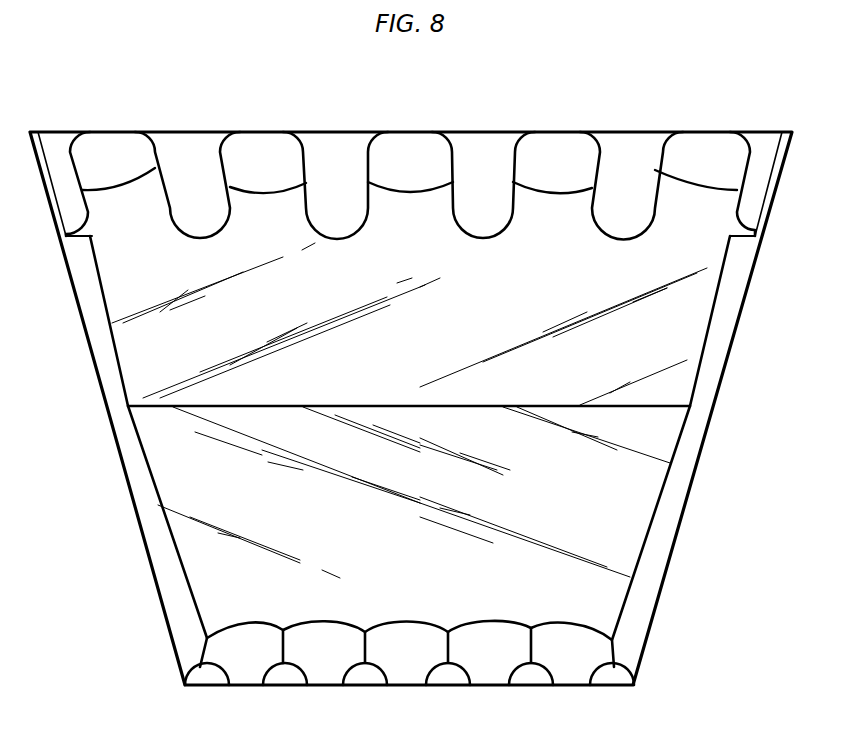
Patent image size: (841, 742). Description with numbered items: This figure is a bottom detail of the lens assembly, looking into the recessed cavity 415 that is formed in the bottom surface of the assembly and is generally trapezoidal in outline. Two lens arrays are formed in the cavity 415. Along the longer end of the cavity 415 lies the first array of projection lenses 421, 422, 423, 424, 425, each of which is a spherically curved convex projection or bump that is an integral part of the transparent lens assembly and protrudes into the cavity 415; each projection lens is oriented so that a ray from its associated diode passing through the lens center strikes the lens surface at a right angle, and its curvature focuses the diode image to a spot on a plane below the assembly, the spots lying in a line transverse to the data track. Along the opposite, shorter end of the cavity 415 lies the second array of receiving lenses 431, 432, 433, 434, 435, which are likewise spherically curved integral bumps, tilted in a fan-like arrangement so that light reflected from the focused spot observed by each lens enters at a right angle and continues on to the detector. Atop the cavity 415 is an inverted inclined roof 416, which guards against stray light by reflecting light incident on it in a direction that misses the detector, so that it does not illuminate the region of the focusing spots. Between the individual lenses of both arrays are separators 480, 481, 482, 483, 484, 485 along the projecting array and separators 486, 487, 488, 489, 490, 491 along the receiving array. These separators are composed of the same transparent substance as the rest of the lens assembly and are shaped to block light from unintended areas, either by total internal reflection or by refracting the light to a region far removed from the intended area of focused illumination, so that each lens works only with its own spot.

The recessed cavity 415 is at (680, 472).
The inverted inclined roof 416 is at (188, 478).
The projection lens 421 is at (720, 145).
The projection lens 422 is at (565, 143).
The projection lens 423 is at (417, 145).
The projection lens 424 is at (260, 144).
The projection lens 425 is at (117, 148).
The receiving lens 431 is at (568, 647).
The receiving lens 432 is at (487, 643).
The receiving lens 433 is at (410, 643).
The receiving lens 434 is at (327, 642).
The receiving lens 435 is at (250, 641).
The separator 480 is at (72, 213).
The separator 481 is at (200, 228).
The separator 482 is at (338, 228).
The separator 483 is at (483, 228).
The separator 484 is at (622, 228).
The separator 485 is at (748, 213).
The separator 486 is at (210, 679).
The separator 487 is at (290, 679).
The separator 488 is at (373, 679).
The separator 489 is at (454, 679).
The separator 490 is at (534, 679).
The separator 491 is at (613, 679).